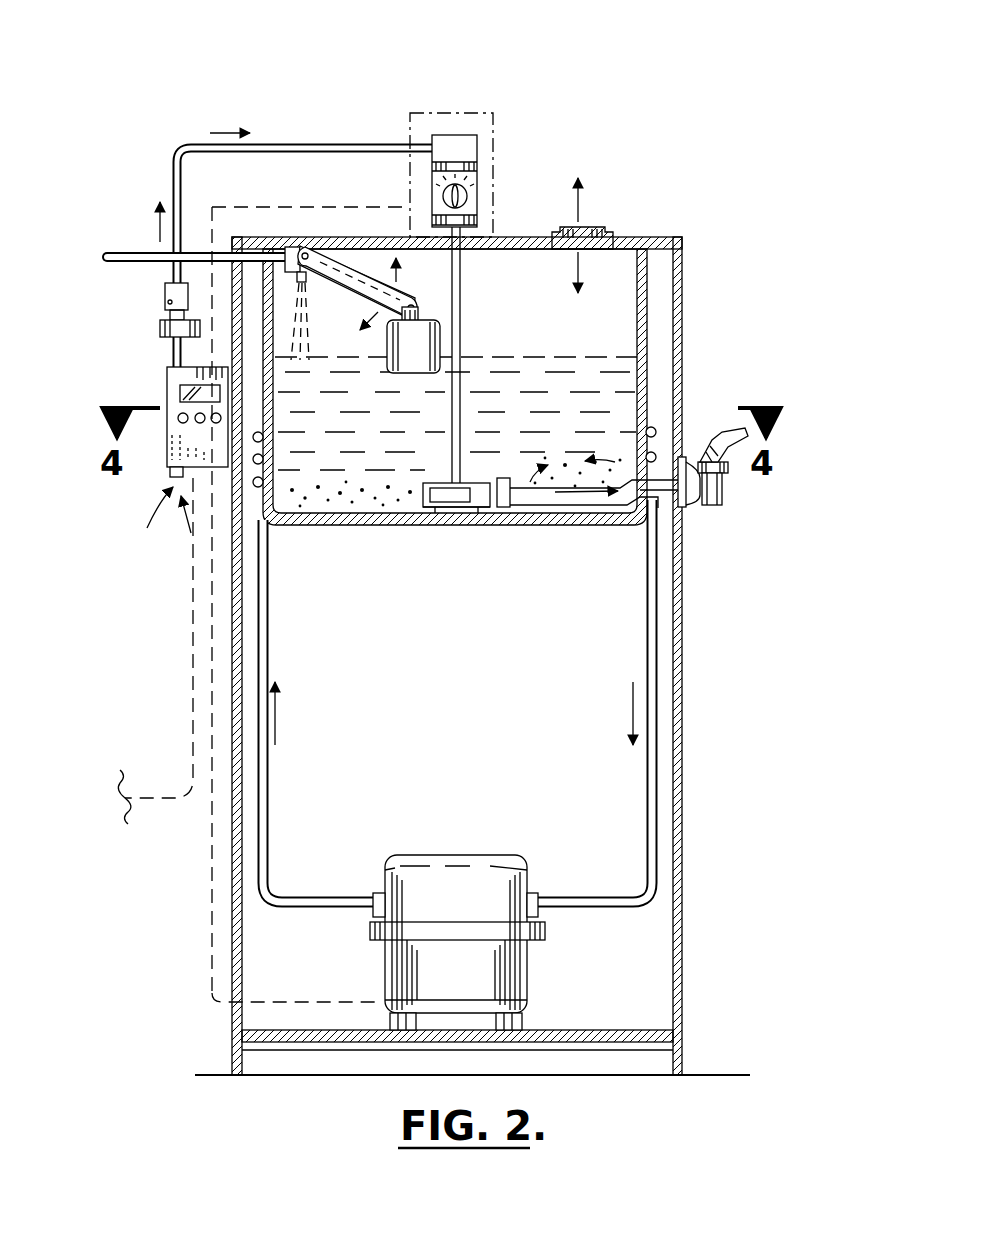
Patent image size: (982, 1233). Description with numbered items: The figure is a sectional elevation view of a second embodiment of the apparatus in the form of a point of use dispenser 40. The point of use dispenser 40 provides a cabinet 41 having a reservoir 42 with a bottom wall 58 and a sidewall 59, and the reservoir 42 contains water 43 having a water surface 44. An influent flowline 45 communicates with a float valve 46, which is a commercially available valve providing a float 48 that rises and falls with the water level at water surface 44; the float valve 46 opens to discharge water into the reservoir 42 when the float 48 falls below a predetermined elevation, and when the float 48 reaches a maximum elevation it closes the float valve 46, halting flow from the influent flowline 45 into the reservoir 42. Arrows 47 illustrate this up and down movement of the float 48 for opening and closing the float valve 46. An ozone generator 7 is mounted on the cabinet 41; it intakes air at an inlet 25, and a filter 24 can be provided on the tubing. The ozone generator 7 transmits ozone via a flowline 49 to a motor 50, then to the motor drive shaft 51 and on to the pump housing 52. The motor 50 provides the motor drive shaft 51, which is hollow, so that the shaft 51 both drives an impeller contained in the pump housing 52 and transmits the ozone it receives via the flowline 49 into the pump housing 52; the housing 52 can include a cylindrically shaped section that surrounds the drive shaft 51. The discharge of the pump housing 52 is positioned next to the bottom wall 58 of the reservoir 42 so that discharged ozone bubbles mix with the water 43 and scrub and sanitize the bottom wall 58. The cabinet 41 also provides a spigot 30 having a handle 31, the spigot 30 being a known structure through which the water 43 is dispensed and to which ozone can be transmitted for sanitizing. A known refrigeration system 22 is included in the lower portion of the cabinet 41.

The point of use dispenser 40 is at (352, 66).
The cabinet 41 is at (682, 868).
The reservoir 42 is at (647, 347).
The water 43 is at (622, 395).
The water surface 44 is at (500, 360).
The influent flowline 45 is at (145, 262).
The float valve 46 is at (306, 280).
The arrows 47 is at (398, 262).
The float 48 is at (412, 376).
The flowline 49 is at (330, 143).
The motor 50 is at (478, 170).
The motor drive shaft 51 is at (462, 468).
The pump housing 52 is at (432, 481).
The bottom wall 58 is at (487, 510).
The sidewall 59 is at (650, 283).
The spigot 30 is at (722, 503).
The handle 31 is at (709, 436).
The filter 24 is at (160, 328).
The ozone generator 7 is at (165, 385).
The inlet 25 is at (172, 472).
The refrigeration system 22 is at (466, 713).